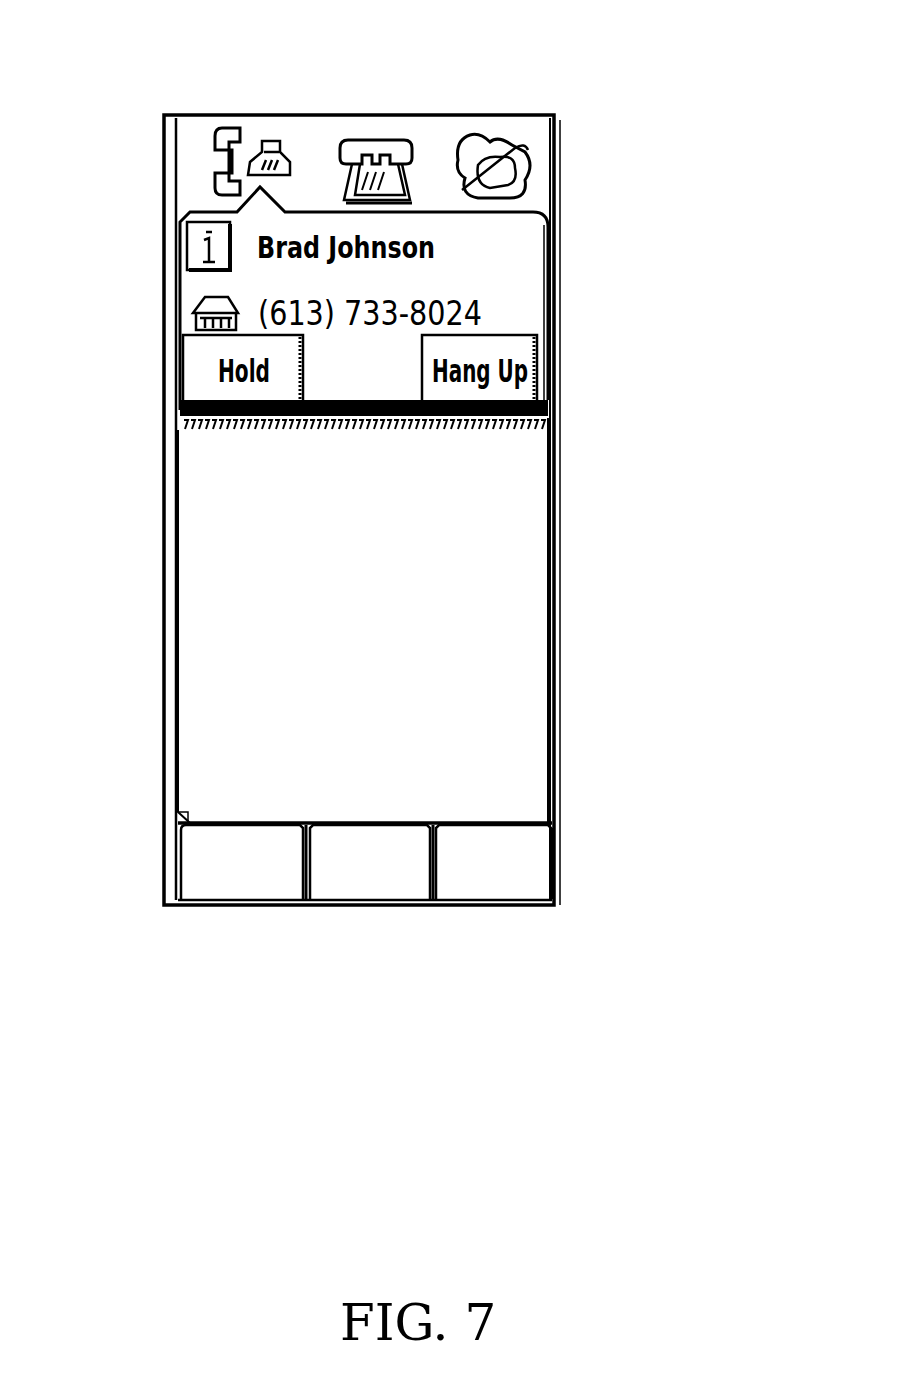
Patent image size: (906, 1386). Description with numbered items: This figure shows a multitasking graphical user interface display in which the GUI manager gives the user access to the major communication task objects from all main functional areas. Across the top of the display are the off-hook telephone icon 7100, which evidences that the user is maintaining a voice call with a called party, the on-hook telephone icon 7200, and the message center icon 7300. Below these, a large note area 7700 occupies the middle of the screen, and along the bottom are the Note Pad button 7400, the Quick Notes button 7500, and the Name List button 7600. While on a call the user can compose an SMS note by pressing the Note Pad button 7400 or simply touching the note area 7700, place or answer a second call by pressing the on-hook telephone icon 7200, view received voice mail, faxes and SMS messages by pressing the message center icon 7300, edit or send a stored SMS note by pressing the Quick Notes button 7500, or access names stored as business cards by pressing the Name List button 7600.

The off-hook telephone icon 7100 is at (222, 137).
The on-hook telephone icon 7200 is at (370, 140).
The message center icon 7300 is at (520, 140).
The Note Pad button 7400 is at (193, 887).
The Quick Notes button 7500 is at (320, 885).
The Name List button 7600 is at (535, 885).
The note area 7700 is at (510, 620).